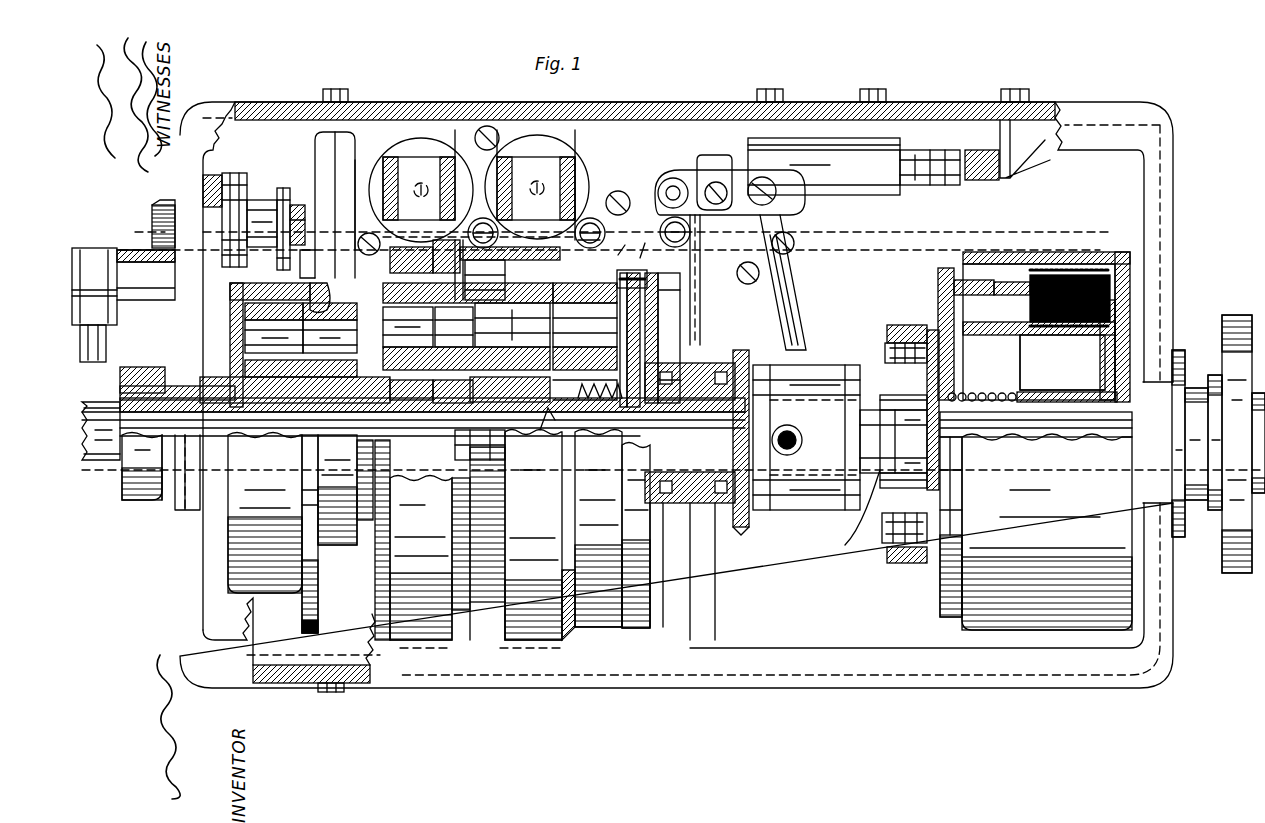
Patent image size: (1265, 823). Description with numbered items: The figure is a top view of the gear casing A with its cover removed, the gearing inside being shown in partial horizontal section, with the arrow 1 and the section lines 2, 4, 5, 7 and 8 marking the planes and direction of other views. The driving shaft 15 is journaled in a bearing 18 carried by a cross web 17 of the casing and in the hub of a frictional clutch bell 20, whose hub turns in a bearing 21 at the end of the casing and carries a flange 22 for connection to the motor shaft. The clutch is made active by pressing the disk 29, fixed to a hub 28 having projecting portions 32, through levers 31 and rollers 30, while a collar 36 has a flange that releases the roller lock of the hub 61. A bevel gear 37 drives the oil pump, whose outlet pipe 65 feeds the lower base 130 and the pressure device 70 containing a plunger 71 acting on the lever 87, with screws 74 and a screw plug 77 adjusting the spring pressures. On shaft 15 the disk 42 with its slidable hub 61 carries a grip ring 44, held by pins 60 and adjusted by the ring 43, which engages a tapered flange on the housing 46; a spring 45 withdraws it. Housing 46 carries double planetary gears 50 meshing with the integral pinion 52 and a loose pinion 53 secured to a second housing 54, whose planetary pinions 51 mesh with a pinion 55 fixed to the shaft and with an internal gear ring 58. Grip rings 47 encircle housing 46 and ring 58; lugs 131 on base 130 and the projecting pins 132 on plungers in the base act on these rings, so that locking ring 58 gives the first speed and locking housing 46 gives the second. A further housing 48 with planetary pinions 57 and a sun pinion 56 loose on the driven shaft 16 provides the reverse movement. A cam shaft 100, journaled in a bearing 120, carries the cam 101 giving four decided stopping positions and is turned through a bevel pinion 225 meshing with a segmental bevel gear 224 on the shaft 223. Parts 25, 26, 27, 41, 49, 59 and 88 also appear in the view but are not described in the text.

The casing 1 is at (875, 262).
The section line 2— 2 is at (375, 715).
The section line 4— 4 is at (211, 715).
The section line 5— 5 is at (1085, 233).
The section line 7 is at (663, 720).
The section line 8— 8 is at (475, 715).
The driving shaft 15 is at (853, 513).
The driven shaft 16 is at (101, 431).
The cross web 17 is at (701, 571).
The bearing 18 is at (680, 510).
The frictional clutch bell 20 is at (1036, 521).
The bearing 21 is at (1185, 358).
The flange 22 is at (1222, 327).
The coil winding 25 is at (1052, 298).
The flange 26 is at (945, 272).
The magnet housing 27 is at (942, 306).
The hub 28 is at (908, 488).
The disk 29 is at (936, 381).
The rollers 30 is at (885, 353).
The levers 31 is at (887, 330).
The projecting portions 32 is at (893, 441).
The collar 36 is at (812, 425).
The bevel gear 37 is at (990, 387).
The clutch pin 41 is at (788, 428).
The disk 42 is at (640, 334).
The ring 43 is at (645, 241).
The grip ring 44 is at (621, 243).
The spring 45 is at (600, 380).
The housing 46 is at (606, 535).
The grip rings 47 is at (476, 535).
The housing 48 is at (354, 537).
The gear 49 is at (273, 533).
The double gears 50 is at (493, 280).
The planetary pinions 51 is at (398, 300).
The integral pinion 52 is at (545, 426).
The pinion 53 is at (480, 460).
The housing 54 is at (434, 270).
The pinion 55 is at (352, 353).
The sun pinion 56 is at (348, 340).
The planetary pinions 57 is at (325, 300).
The internal gear ring 58 is at (372, 256).
The bracket 59 is at (480, 590).
The pins 60 is at (647, 283).
The hub 61 is at (668, 340).
The pipe 65 is at (796, 301).
The device 70 is at (824, 166).
The plunger 71 is at (930, 167).
The screws 74 is at (714, 182).
The screw plug 77 is at (766, 178).
The lever 87 is at (985, 180).
The bracket 88 is at (1018, 158).
The cam shaft 100 is at (305, 219).
The cam 101 is at (253, 197).
The bearing 120 is at (500, 237).
The lower base 130 is at (710, 232).
The lugs 131 is at (500, 148).
The projecting pin 132 is at (362, 166).
The shaft 223 is at (106, 337).
The segmental bevel gear 224 is at (100, 250).
The bevel pinion 225 is at (152, 206).
The gear casing A is at (745, 604).